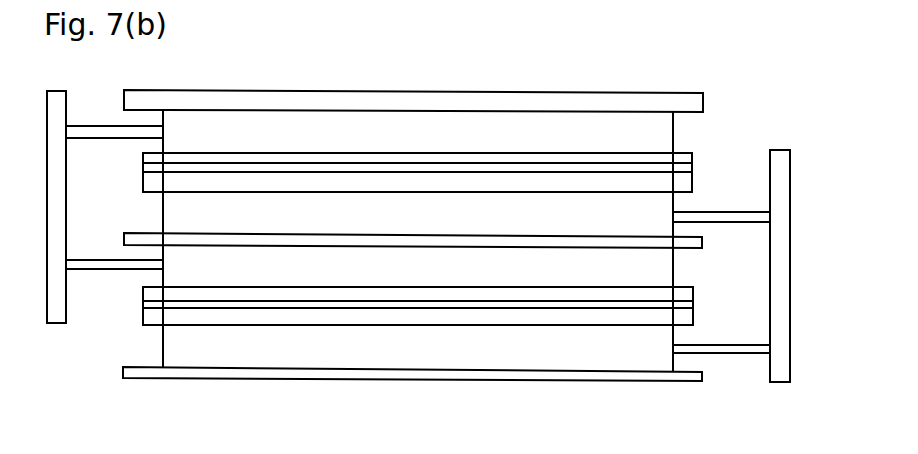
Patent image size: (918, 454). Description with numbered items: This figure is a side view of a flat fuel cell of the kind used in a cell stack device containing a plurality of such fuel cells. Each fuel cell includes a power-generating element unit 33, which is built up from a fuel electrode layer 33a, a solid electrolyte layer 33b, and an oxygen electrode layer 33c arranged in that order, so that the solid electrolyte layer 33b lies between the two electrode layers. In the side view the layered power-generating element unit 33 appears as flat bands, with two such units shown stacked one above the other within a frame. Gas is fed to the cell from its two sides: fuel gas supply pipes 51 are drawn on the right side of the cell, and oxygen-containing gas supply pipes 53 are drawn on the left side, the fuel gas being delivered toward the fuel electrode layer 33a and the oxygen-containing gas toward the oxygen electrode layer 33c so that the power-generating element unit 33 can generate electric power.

The power-generating element unit 33 is at (713, 180).
The fuel electrode layer 33a is at (693, 318).
The solid electrolyte layer 33b is at (575, 302).
The oxygen electrode layer 33c is at (547, 160).
The fuel gas supply pipes 51 is at (733, 355).
The oxygen-containing gas supply pipes 53 is at (112, 271).